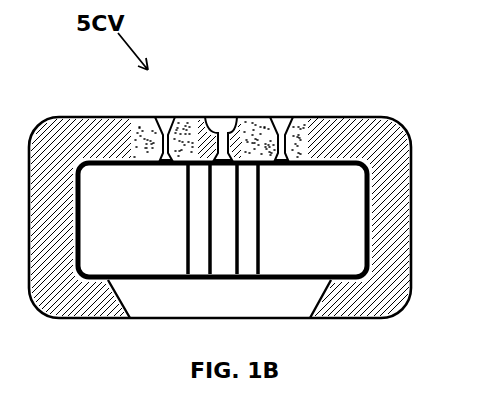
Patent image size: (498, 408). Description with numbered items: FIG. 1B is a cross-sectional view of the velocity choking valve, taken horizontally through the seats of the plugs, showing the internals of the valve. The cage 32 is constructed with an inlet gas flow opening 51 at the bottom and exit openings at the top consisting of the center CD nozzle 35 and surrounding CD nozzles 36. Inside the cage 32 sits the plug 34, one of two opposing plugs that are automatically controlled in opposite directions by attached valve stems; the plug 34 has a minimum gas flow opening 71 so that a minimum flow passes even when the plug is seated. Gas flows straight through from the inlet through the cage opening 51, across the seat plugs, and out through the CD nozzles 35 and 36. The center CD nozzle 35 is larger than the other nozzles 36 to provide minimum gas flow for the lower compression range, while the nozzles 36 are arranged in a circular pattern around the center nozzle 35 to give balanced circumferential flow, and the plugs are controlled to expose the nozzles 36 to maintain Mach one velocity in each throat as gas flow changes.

The cage 32 is at (60, 117).
The plug 34 is at (326, 182).
The center CD nozzle 35 is at (220, 117).
The surrounding CD nozzles 36 is at (291, 117).
The inlet gas flow opening 51 is at (286, 321).
The minimum gas flow opening 71 is at (202, 263).